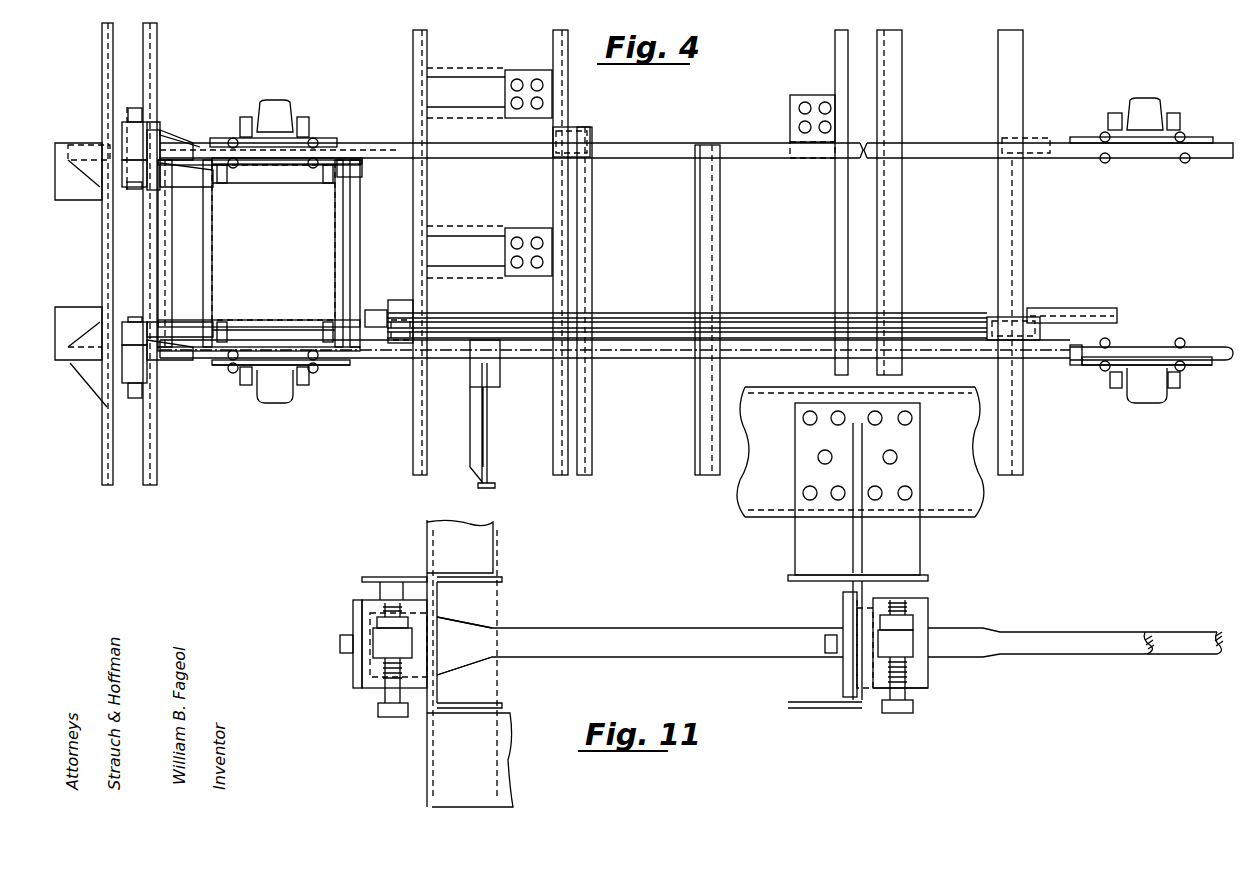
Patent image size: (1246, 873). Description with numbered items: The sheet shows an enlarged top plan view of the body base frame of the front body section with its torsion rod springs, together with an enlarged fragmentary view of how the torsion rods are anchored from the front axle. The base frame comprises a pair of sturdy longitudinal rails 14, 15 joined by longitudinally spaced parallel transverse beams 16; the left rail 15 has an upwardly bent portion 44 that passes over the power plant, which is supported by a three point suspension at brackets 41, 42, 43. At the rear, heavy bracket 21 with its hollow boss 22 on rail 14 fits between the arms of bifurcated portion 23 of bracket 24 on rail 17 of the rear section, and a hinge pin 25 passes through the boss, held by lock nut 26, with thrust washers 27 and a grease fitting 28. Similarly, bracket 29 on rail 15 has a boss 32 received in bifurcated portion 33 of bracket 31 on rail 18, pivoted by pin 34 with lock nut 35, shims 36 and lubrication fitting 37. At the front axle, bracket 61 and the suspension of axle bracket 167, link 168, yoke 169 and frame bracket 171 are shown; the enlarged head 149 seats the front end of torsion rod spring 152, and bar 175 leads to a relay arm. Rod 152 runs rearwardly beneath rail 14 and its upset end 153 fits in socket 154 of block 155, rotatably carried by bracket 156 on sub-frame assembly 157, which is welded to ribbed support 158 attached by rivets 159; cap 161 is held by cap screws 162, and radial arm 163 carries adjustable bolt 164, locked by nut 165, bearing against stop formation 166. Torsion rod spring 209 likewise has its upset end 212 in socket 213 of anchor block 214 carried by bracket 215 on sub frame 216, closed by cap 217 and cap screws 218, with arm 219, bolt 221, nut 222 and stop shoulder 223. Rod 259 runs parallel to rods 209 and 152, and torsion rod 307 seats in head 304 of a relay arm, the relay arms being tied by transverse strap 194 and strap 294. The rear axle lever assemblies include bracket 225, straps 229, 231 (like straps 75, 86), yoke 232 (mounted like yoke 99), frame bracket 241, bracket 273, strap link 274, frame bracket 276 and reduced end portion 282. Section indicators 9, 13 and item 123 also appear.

In FIG. 4, the section line 9 is at (979, 162).
In FIG. 4, the section line 13 is at (387, 130).
In FIG. 4, the longitudinal rail 14 is at (443, 360).
In FIG. 11, the longitudinal rail 14 is at (985, 507).
In FIG. 4, the longitudinal rail 15 is at (493, 158).
In FIG. 4, the transverse beam 16 is at (899, 208).
In FIG. 4, the longitudinal rail 17 is at (62, 357).
In FIG. 4, the longitudinal rail 18 is at (62, 148).
In FIG. 4, the bracket 21 is at (185, 350).
In FIG. 4, the hollow boss 22 is at (122, 372).
In FIG. 4, the bifurcated portion 23 is at (122, 322).
In FIG. 4, the bracket 24 is at (83, 385).
In FIG. 4, the hinge pin 25 is at (160, 340).
In FIG. 4, the lock nut 26 is at (138, 318).
In FIG. 4, the shims or thrust washers 27 is at (140, 360).
In FIG. 4, the grease fitting 28 is at (135, 398).
In FIG. 4, the bracket 29 is at (168, 148).
In FIG. 4, the bracket 31 is at (102, 108).
In FIG. 4, the hollow boss 32 is at (157, 132).
In FIG. 4, the bifurcated portion 33 is at (118, 110).
In FIG. 4, the pivot pin 34 is at (160, 135).
In FIG. 4, the lock nut 35 is at (137, 190).
In FIG. 4, the shims or thrust washers 36 is at (147, 122).
In FIG. 4, the lubrication fitting 37 is at (133, 105).
In FIG. 4, the bracket 41 is at (538, 54).
In FIG. 4, the bracket 42 is at (533, 232).
In FIG. 4, the bracket 43 is at (818, 96).
In FIG. 4, the upwardly bent portion 44 is at (652, 143).
In FIG. 4, the bracket 61 is at (1150, 403).
In FIG. 4, the strap 75 is at (1115, 388).
In FIG. 4, the strap 86 is at (1178, 388).
In FIG. 4, the yoke 99 is at (1160, 350).
In FIG. 4, the lower plate 123 is at (1188, 368).
In FIG. 4, the enlarged head 149 is at (1075, 365).
In FIG. 4, the torsion rod spring 152 is at (1043, 347).
In FIG. 11, the torsion rod spring 152 is at (1115, 656).
In FIG. 11, the upset rear end 153 is at (928, 675).
In FIG. 11, the socket 154 is at (928, 608).
In FIG. 11, the block 155 is at (913, 660).
In FIG. 11, the bracket 156 is at (862, 600).
In FIG. 4, the sub-frame assembly 157 is at (485, 400).
In FIG. 11, the sub-frame assembly 157 is at (855, 705).
In FIG. 4, the depending ribbed support 158 is at (495, 380).
In FIG. 11, the depending ribbed support 158 is at (920, 545).
In FIG. 11, the rivets 159 is at (912, 493).
In FIG. 11, the cap 161 is at (843, 680).
In FIG. 11, the cap screws 162 is at (830, 635).
In FIG. 11, the radial arm 163 is at (913, 645).
In FIG. 11, the adjustable bolt 164 is at (913, 708).
In FIG. 11, the nut 165 is at (913, 622).
In FIG. 11, the stop formation 166 is at (915, 592).
In FIG. 4, the axle bracket 167 is at (1152, 100).
In FIG. 4, the link 168 is at (1178, 115).
In FIG. 4, the yoke 169 is at (1158, 150).
In FIG. 4, the frame bracket 171 is at (1195, 140).
In FIG. 4, the longitudinal bar 175 is at (1058, 137).
In FIG. 4, the strap 194 is at (1020, 205).
In FIG. 4, the torsion rod spring 209 is at (915, 318).
In FIG. 11, the torsion rod spring 209 is at (630, 656).
In FIG. 11, the upset rear end 212 is at (455, 667).
In FIG. 11, the socket 213 is at (378, 675).
In FIG. 11, the anchor block 214 is at (362, 598).
In FIG. 4, the bracket 215 is at (313, 138).
In FIG. 11, the bracket 215 is at (420, 577).
In FIG. 11, the sub frame 216 is at (505, 575).
In FIG. 11, the closure cap 217 is at (353, 618).
In FIG. 11, the cap screws 218 is at (340, 650).
In FIG. 11, the radial arm 219 is at (412, 648).
In FIG. 11, the adjustable bolt 221 is at (393, 717).
In FIG. 11, the nut 222 is at (405, 618).
In FIG. 11, the stop shoulder 223 is at (387, 585).
In FIG. 4, the bracket 225 is at (265, 403).
In FIG. 4, the strap 229 is at (308, 382).
In FIG. 4, the strap 231 is at (240, 380).
In FIG. 4, the yoke 232 is at (305, 366).
In FIG. 4, the bracket 241 is at (220, 365).
In FIG. 4, the torsion rod 259 is at (955, 330).
In FIG. 4, the bracket 273 is at (283, 100).
In FIG. 4, the strap link 274 is at (306, 118).
In FIG. 4, the frame bracket 276 is at (222, 137).
In FIG. 4, the reduced end portion 282 is at (362, 167).
In FIG. 4, the transverse strap 294 is at (358, 240).
In FIG. 4, the head 304 is at (372, 310).
In FIG. 4, the torsion rod 307 is at (805, 313).